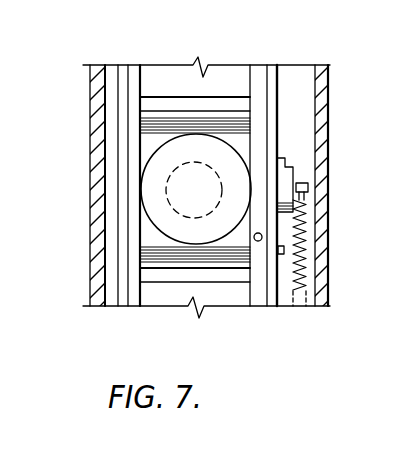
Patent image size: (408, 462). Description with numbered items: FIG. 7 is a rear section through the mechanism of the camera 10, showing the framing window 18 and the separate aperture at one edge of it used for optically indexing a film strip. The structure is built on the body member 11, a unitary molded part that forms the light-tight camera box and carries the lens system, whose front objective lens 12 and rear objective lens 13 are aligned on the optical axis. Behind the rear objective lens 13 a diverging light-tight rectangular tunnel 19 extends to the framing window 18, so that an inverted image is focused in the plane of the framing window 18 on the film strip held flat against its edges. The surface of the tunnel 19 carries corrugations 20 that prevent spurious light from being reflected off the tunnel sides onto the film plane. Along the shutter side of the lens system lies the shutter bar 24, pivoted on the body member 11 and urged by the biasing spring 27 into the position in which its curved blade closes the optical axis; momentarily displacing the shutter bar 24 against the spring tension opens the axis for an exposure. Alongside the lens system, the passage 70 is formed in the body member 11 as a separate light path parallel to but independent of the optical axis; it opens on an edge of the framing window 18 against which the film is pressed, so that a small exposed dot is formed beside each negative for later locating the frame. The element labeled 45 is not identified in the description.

The camera 10 is at (76, 292).
The body member 11 is at (118, 115).
The front objective lens 12 is at (263, 142).
The rear objective lens 13 is at (144, 175).
The framing window 18 is at (258, 80).
The light-tight rectangular tunnel 19 is at (143, 229).
The corrugations 20 is at (187, 252).
The shutter bar 24 is at (291, 181).
The biasing spring 27 is at (284, 250).
The side wall 45 is at (95, 211).
The passage 70 is at (262, 239).